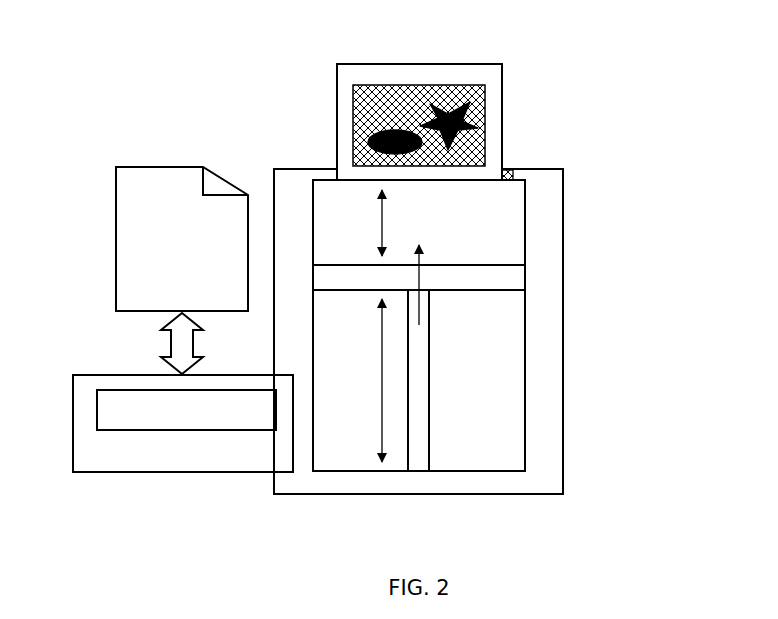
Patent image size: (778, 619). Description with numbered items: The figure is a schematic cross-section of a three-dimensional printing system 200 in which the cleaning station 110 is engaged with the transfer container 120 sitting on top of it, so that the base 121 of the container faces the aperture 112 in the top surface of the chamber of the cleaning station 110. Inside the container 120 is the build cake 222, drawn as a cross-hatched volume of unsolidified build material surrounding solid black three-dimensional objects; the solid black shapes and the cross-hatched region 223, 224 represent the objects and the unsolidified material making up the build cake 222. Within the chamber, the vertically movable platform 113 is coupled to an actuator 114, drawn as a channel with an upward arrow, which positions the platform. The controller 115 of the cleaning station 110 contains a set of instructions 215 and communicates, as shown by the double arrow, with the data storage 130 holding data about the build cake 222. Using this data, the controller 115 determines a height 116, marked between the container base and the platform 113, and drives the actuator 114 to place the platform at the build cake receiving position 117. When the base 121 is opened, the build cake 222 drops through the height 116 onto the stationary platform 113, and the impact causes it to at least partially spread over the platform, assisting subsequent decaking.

The cleaning station 110 is at (570, 349).
The aperture 112 is at (516, 174).
The platform 113 is at (507, 294).
The actuator 114 is at (436, 391).
The controller 115 is at (183, 423).
The height 116 is at (358, 223).
The build cake receiving position 117 is at (358, 380).
The transfer container 120 is at (510, 150).
The base 121 is at (451, 184).
The data storage 130 is at (182, 249).
The three-dimensional printing system 200 is at (419, 95).
The set of instructions 215 is at (186, 410).
The build cake 222 is at (375, 80).
The particle 223 is at (476, 116).
The inclusions 224 is at (428, 104).